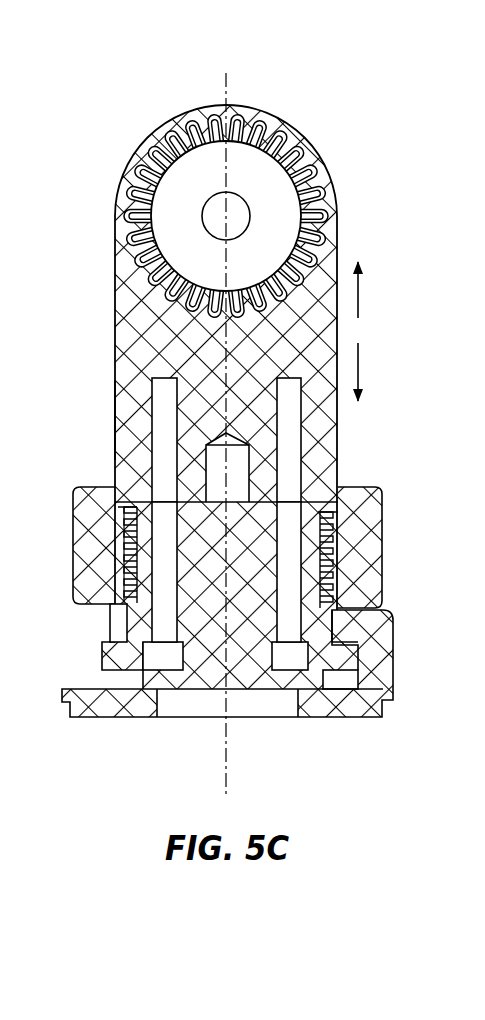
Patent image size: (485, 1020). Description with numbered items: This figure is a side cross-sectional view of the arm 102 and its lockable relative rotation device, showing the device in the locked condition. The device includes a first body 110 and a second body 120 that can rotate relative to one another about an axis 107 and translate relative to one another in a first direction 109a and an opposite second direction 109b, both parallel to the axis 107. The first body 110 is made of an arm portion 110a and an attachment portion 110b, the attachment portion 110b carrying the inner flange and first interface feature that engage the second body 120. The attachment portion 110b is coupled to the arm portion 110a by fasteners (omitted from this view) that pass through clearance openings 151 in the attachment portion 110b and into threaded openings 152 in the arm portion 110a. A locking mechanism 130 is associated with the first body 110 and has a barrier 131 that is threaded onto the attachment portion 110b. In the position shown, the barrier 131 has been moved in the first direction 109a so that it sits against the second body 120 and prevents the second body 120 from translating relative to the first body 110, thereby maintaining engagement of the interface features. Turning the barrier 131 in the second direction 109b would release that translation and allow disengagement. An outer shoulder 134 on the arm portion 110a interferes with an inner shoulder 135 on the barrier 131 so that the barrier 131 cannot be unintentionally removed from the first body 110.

The arm 102 is at (138, 108).
The axis 107 is at (226, 767).
The first direction 109a is at (360, 367).
The second direction 109b is at (360, 294).
The first body 110 is at (96, 310).
The arm portion 110a is at (124, 412).
The attachment portion 110b is at (117, 627).
The second body 120 is at (410, 702).
The locking mechanism 130 is at (383, 470).
The barrier 131 is at (74, 588).
The outer shoulder 134 is at (122, 508).
The inner shoulder 135 is at (124, 517).
The openings 151 is at (296, 560).
The openings 152 is at (296, 451).